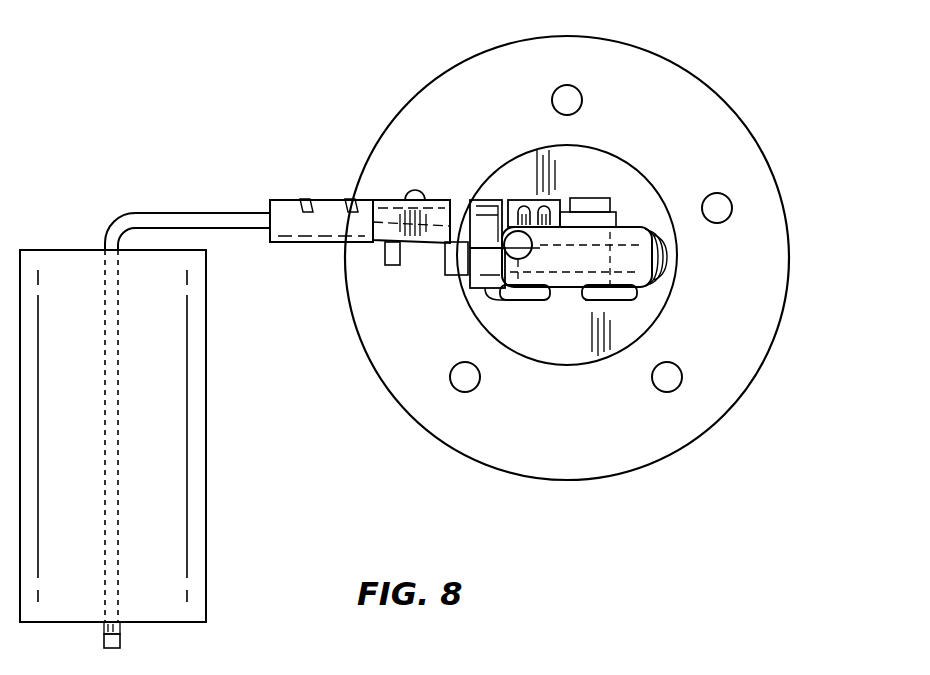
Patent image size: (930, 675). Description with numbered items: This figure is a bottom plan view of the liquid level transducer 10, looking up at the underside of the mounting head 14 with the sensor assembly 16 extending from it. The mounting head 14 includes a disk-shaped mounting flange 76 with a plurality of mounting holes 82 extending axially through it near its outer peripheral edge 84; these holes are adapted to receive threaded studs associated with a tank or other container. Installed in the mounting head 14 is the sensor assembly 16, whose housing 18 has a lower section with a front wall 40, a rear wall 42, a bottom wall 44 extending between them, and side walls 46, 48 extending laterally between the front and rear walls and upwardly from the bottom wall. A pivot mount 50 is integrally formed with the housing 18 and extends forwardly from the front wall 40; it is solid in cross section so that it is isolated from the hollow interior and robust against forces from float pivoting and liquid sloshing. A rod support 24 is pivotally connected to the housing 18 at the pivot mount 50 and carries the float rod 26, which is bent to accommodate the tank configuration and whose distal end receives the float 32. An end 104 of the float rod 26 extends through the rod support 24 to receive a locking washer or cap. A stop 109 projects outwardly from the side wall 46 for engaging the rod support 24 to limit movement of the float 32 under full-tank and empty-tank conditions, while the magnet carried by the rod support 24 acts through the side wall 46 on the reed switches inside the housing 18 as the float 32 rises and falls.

The liquid level transducer 10 is at (148, 101).
The mounting head 14 is at (721, 83).
The sensor assembly 16 is at (592, 192).
The housing 18 is at (662, 269).
The rod support 24 is at (285, 200).
The float rod 26 is at (176, 213).
The float 32 is at (210, 420).
The front wall 40 is at (490, 288).
The rear wall 42 is at (667, 245).
The bottom wall 44 is at (585, 270).
The side wall 46 is at (606, 210).
The side wall 48 is at (583, 300).
The pivot mount 50 is at (457, 276).
The mounting flange 76 is at (732, 128).
The mounting holes 82 is at (572, 85).
The outer peripheral edge 84 is at (738, 386).
The end of the float rod 104 is at (388, 266).
The stop 109 is at (520, 200).